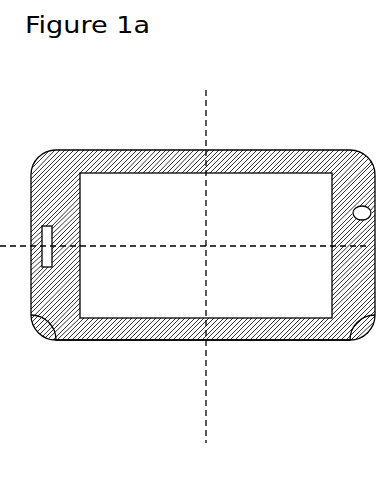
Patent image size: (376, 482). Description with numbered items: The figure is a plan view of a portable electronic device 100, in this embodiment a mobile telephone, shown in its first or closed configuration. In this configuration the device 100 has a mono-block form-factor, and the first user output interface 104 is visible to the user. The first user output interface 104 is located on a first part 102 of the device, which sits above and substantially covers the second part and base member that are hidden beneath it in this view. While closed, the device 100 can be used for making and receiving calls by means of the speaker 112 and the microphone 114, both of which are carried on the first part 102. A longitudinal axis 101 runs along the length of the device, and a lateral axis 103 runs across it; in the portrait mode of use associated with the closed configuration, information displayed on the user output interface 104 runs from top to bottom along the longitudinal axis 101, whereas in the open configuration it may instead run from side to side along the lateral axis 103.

The portable electronic device 100 is at (139, 131).
The longitudinal axis 101 is at (2, 247).
The first part 102 is at (143, 340).
The lateral axis 103 is at (206, 100).
The first user output interface 104 is at (265, 173).
The speaker 112 is at (46, 238).
The microphone 114 is at (358, 220).